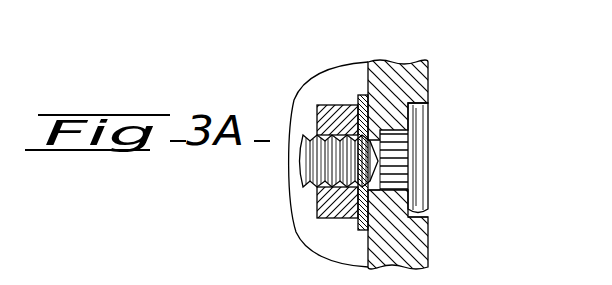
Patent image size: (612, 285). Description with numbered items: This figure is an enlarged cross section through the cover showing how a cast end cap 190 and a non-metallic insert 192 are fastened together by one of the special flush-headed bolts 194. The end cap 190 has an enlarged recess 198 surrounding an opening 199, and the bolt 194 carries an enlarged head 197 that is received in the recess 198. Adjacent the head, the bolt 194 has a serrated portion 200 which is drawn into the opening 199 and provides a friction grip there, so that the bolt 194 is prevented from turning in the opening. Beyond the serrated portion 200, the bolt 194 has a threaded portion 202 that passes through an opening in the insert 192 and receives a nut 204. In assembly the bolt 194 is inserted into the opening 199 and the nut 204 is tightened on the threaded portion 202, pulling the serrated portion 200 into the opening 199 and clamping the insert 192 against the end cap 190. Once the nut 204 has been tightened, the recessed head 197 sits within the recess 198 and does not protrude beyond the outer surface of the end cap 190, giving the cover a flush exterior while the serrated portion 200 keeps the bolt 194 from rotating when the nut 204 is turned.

The end cap 190 is at (407, 63).
The insert 192 is at (370, 193).
The flush-headed bolt 194 is at (284, 133).
The enlarged head 197 is at (427, 151).
The enlarged recess 198 is at (425, 110).
The opening 199 is at (388, 190).
The serrated portion 200 is at (360, 102).
The threaded portion 202 is at (307, 162).
The nut 204 is at (322, 110).